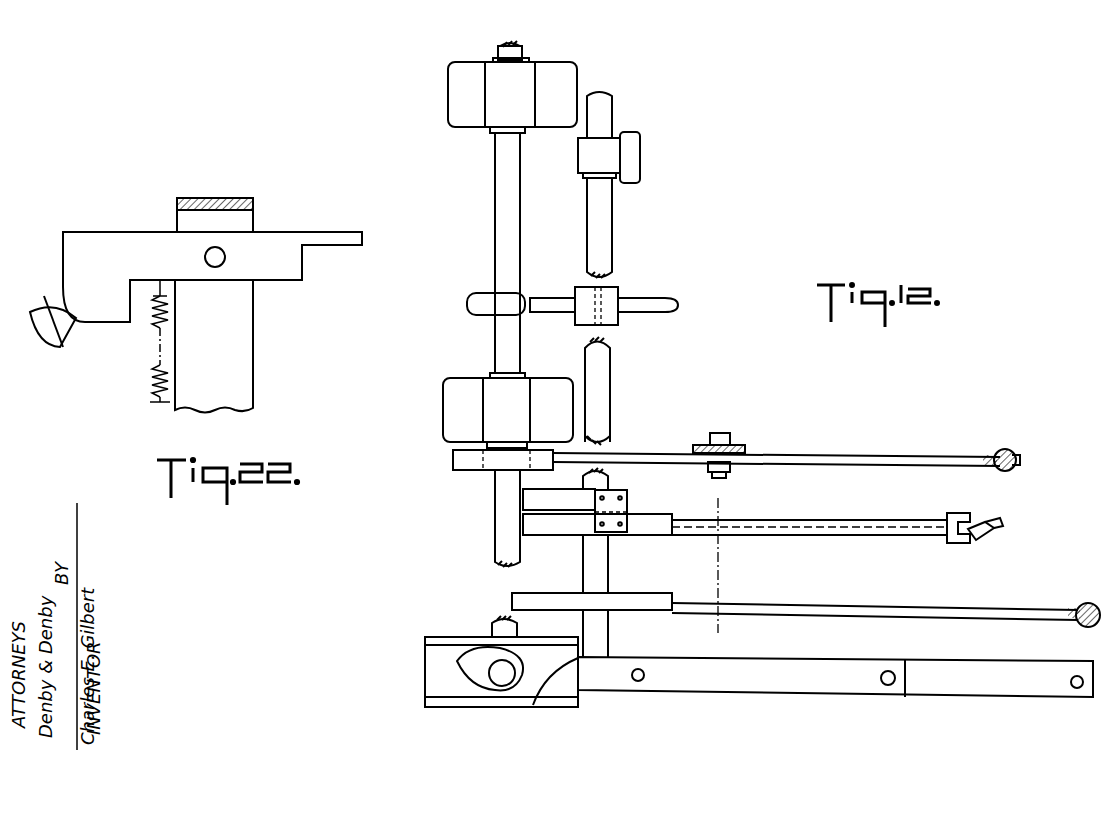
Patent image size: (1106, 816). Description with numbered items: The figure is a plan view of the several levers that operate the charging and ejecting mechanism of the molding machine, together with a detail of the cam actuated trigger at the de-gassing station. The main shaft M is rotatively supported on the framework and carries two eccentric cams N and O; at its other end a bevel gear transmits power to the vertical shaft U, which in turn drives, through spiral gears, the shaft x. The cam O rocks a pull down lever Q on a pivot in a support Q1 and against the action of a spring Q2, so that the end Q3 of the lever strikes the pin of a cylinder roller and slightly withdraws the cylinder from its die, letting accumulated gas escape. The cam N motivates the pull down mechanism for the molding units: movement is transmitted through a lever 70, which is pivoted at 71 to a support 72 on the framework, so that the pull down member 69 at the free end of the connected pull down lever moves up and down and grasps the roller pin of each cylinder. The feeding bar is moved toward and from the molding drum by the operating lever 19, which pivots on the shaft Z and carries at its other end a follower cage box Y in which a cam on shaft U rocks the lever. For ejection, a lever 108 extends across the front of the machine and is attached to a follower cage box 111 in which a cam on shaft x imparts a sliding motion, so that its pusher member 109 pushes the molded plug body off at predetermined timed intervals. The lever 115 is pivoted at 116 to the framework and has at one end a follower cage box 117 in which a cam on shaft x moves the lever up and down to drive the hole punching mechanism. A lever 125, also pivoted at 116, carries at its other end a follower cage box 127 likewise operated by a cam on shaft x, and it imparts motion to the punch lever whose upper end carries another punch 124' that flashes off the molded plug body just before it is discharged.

In FIG. 12, the shaft M is at (505, 162).
In FIG. 12, the shaft x is at (605, 237).
In FIG. 12, the eccentric cam O is at (470, 298).
In FIG. 22, the eccentric cam O is at (52, 340).
In FIG. 12, the pull down lever Q is at (540, 296).
In FIG. 22, the pull down lever Q is at (296, 232).
In FIG. 12, the eccentric cam N is at (453, 468).
In FIG. 12, the lever 70 is at (913, 455).
In FIG. 12, the pivot 71 is at (724, 434).
In FIG. 12, the support 72 is at (748, 450).
In FIG. 12, the pull down member 69 is at (1012, 452).
In FIG. 12, the follower cage box 111 is at (546, 498).
In FIG. 12, the follower cage box 127 is at (560, 533).
In FIG. 12, the lever 108 is at (853, 520).
In FIG. 12, the lever 125 is at (845, 537).
In FIG. 12, the pusher member 109 is at (955, 513).
In FIG. 12, the punch 124' is at (1017, 531).
In FIG. 12, the pivot 116 is at (722, 603).
In FIG. 12, the follower cage box 117 is at (633, 597).
In FIG. 12, the lever 115 is at (930, 607).
In FIG. 12, the operating lever 19 is at (853, 693).
In FIG. 12, the shaft Z is at (643, 681).
In FIG. 12, the vertical shaft U is at (502, 688).
In FIG. 12, the follower cage box Y is at (565, 707).
In FIG. 22, the end of pull down lever Q3 is at (356, 240).
In FIG. 22, the support Q1 is at (244, 347).
In FIG. 22, the spring Q2 is at (153, 318).